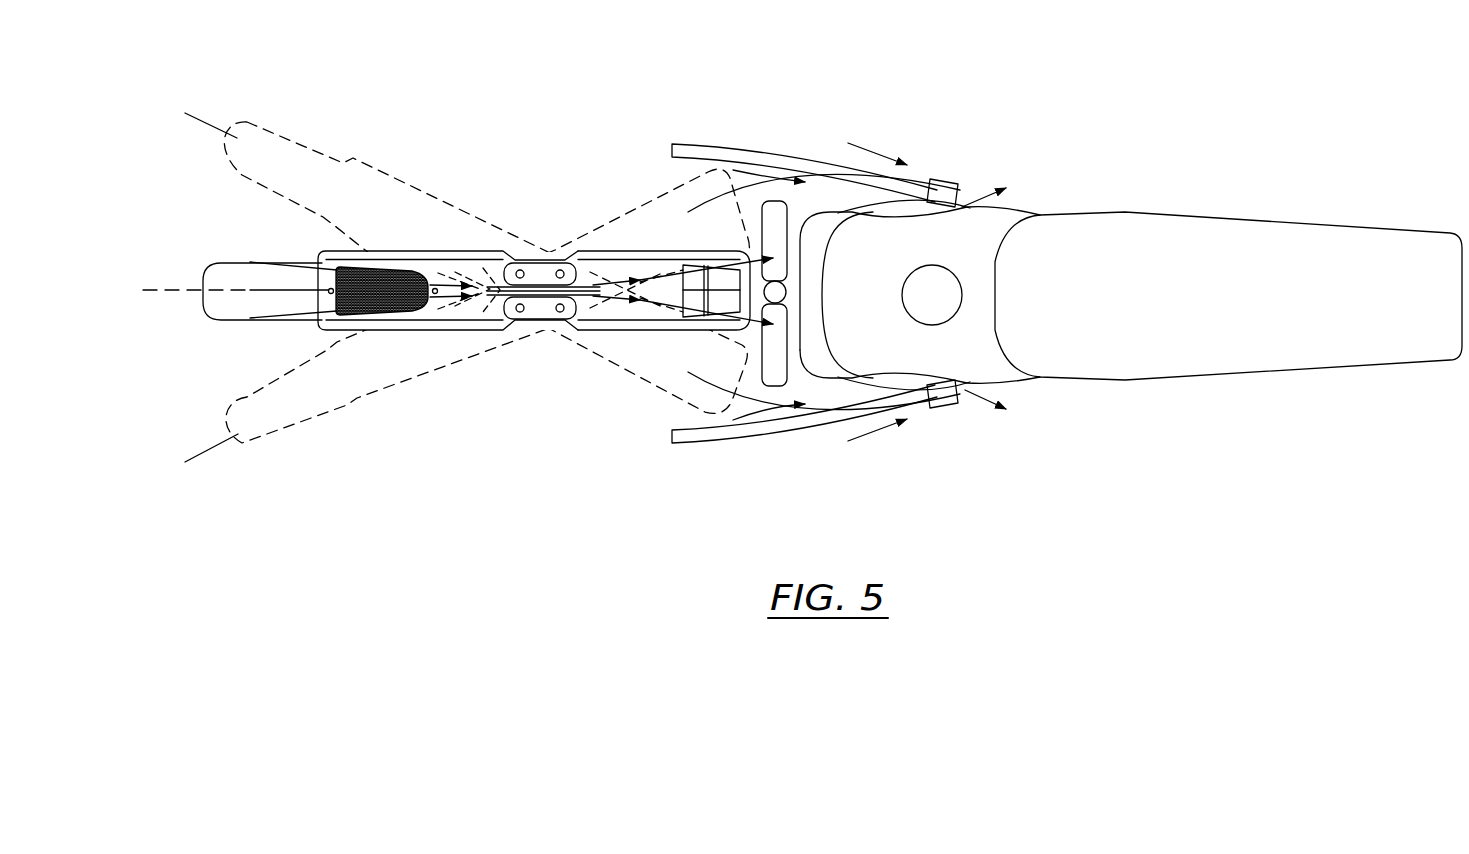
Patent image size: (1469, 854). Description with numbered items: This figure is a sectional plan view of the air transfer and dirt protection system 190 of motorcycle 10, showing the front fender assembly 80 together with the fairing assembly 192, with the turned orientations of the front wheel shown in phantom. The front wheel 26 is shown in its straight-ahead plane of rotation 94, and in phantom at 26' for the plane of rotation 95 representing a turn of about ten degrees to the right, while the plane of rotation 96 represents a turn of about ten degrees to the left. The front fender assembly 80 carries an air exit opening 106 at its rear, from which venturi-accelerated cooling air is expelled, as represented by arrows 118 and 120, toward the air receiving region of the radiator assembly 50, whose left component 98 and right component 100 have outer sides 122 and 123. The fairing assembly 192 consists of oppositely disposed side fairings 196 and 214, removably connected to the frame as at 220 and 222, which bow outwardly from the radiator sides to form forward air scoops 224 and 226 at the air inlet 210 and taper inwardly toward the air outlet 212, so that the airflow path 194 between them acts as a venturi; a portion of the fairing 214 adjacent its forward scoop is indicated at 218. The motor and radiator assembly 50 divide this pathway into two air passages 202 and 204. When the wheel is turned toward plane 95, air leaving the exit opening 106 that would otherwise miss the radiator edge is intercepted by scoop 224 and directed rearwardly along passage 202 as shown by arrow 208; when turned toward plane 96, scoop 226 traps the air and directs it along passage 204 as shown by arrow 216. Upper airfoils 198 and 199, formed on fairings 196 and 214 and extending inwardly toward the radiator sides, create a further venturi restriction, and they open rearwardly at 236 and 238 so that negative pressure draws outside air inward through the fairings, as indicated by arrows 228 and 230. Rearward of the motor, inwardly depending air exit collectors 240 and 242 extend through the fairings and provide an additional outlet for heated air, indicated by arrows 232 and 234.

The motorcycle 10 is at (1023, 83).
The wheel 26 is at (404, 273).
The wheel in right-turned orientation 26' is at (485, 250).
The radiator assembly 50 is at (755, 242).
The front fender assembly 80 is at (491, 150).
The plane of rotation 94 is at (157, 290).
The plane of rotation 95 is at (200, 118).
The plane of rotation 96 is at (200, 459).
The left component of radiator assembly 98 is at (757, 200).
The right component of radiator assembly 100 is at (767, 443).
The air exit opening 106 is at (678, 337).
The arrow 118 is at (740, 347).
The arrow 120 is at (695, 275).
The outer side of radiator assembly 122 is at (773, 387).
The outer side of radiator assembly 123 is at (781, 204).
The air transfer and dirt protection system 190 is at (481, 496).
The fairing assembly 192 is at (656, 118).
The airflow path 194 is at (578, 217).
The side fairing 196 is at (860, 418).
The airfoil 198 is at (787, 412).
The airfoil 199 is at (778, 203).
The air passage 202 is at (671, 412).
The air passage 204 is at (690, 186).
The arrow 208 is at (710, 410).
The air inlet 210 is at (840, 420).
The air outlet 212 is at (1043, 197).
The side fairing 214 is at (870, 176).
The arrow 216 is at (731, 145).
The upper cover arc 218 is at (813, 190).
The connection to frame 220 is at (920, 390).
The connection to frame 222 is at (938, 202).
The forward air scoop 224 is at (657, 463).
The forward air scoop 226 is at (666, 166).
The arrow 228 is at (760, 447).
The arrow 230 is at (757, 140).
The arrow 232 is at (990, 395).
The arrow 234 is at (985, 193).
The rearward opening of airfoil member 236 is at (818, 380).
The rearward opening of airfoil member 238 is at (835, 205).
The air exit collector 240 is at (943, 408).
The air exit collector 242 is at (940, 180).